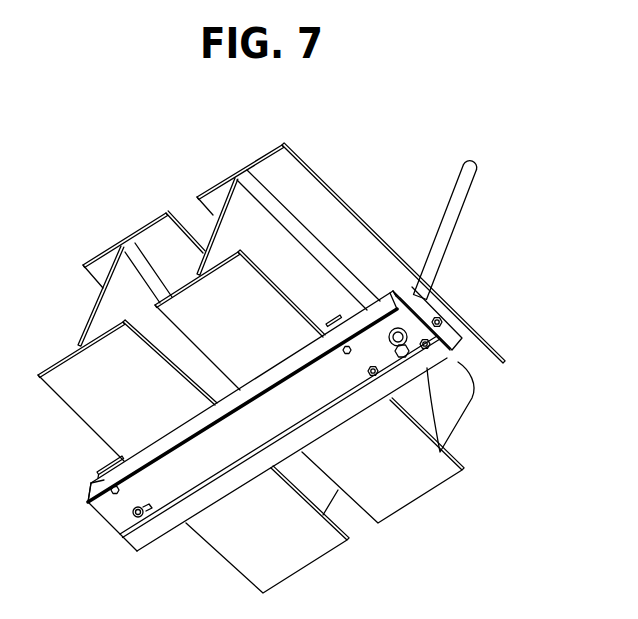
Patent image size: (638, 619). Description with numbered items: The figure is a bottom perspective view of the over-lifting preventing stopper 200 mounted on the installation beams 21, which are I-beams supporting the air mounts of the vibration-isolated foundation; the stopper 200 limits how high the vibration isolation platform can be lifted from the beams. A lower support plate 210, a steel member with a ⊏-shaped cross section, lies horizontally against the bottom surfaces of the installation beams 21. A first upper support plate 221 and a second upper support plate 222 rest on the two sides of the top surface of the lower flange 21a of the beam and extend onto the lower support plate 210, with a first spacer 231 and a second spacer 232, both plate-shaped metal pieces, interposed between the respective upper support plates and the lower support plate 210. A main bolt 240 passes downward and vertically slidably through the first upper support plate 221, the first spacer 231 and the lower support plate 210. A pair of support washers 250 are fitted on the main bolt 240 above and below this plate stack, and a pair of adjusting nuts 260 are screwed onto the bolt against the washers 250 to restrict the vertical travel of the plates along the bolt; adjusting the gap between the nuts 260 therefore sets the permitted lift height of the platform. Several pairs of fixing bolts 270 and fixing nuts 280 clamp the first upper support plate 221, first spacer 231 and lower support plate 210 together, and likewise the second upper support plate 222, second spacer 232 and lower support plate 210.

The installation beam 21 is at (265, 353).
The lower flange 21a is at (67, 372).
The over-lifting preventing stopper 200 is at (299, 357).
The lower support plate 210 is at (172, 520).
The first upper support plate 221 is at (336, 318).
The second upper support plate 222 is at (103, 467).
The first spacer 231 is at (385, 299).
The second spacer 232 is at (96, 478).
The main bolt 240 is at (462, 173).
The support washer 250 is at (440, 312).
The adjusting nut 260 is at (440, 370).
The fixing bolt 270 is at (503, 365).
The fixing nut 280 is at (447, 334).